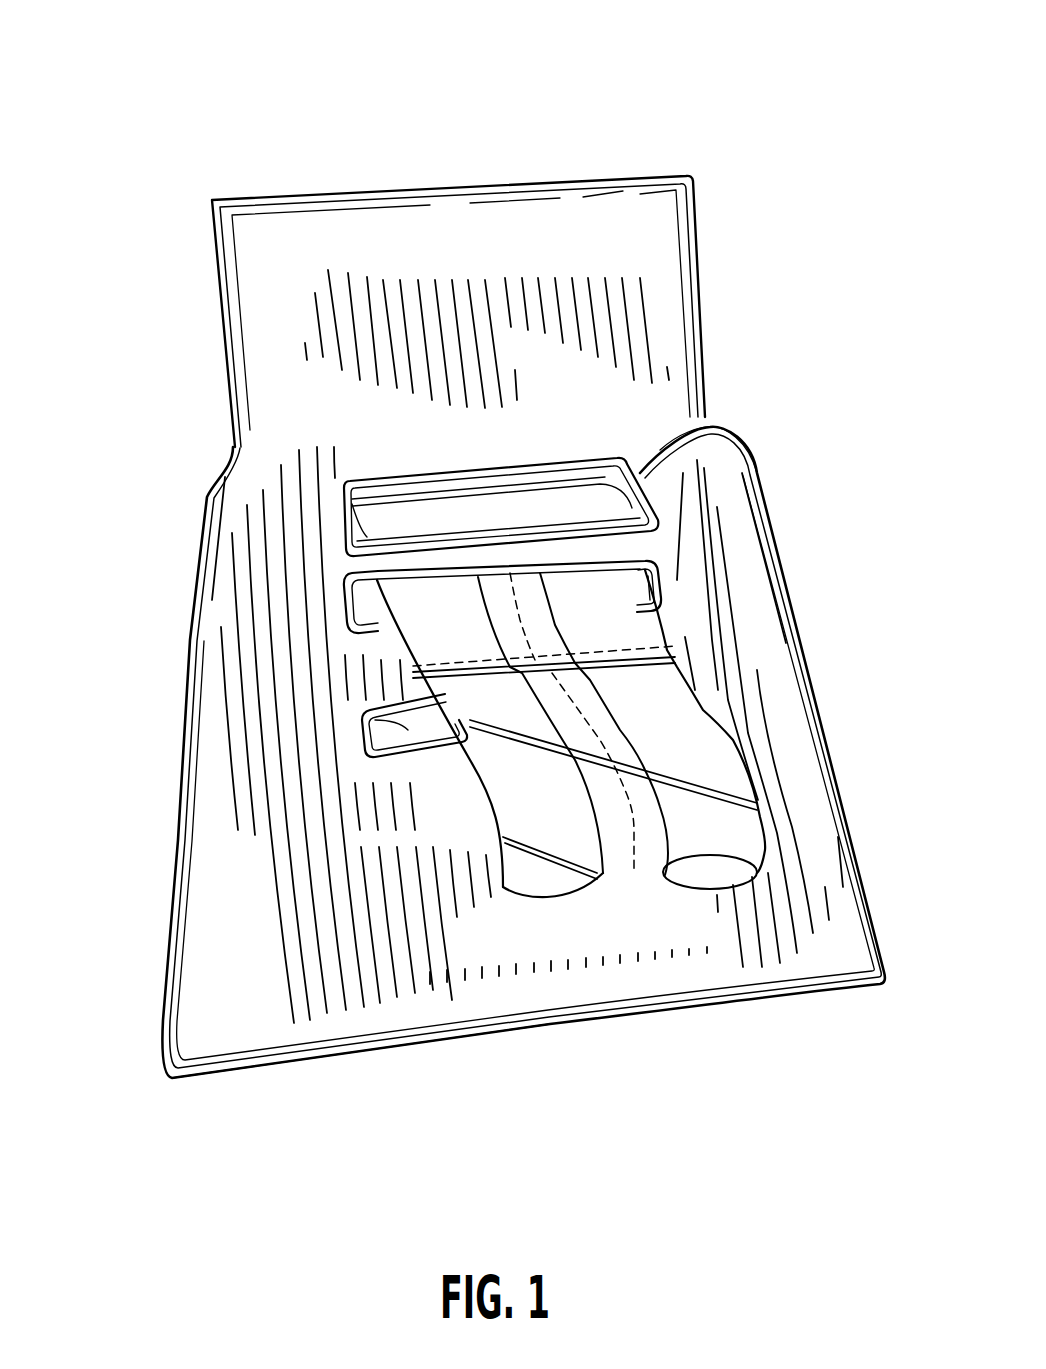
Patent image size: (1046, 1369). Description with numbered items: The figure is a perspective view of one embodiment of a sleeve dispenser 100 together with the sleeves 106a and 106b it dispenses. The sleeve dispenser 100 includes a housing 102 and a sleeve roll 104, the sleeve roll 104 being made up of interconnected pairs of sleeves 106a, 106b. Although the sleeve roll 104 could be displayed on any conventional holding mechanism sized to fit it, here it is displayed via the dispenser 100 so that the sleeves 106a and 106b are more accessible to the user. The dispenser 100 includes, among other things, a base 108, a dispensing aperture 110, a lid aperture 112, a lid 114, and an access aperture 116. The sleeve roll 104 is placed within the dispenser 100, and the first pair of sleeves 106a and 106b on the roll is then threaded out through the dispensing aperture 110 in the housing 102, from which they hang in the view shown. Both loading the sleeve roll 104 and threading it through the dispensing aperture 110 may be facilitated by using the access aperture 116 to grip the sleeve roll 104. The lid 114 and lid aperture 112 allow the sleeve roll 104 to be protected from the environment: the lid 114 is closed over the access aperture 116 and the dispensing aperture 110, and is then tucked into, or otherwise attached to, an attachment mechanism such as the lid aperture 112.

The sleeve dispenser 100 is at (520, 31).
The housing 102 is at (222, 678).
The sleeve roll 104 is at (549, 511).
The sleeve 106a is at (707, 760).
The sleeve 106b is at (547, 863).
The base 108 is at (301, 1068).
The dispensing aperture 110 is at (650, 558).
The lid aperture 112 is at (435, 697).
The lid 114 is at (377, 192).
The access aperture 116 is at (687, 429).